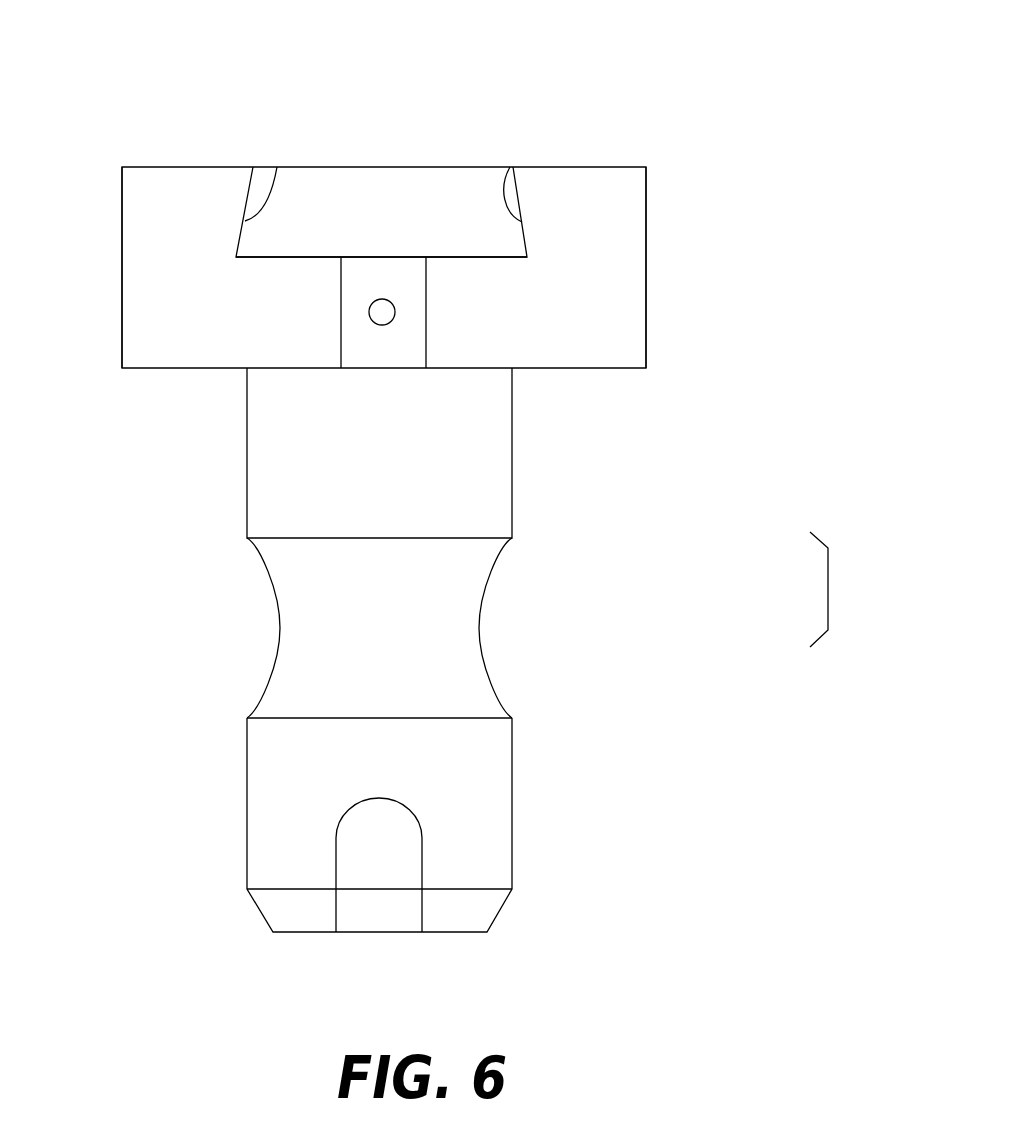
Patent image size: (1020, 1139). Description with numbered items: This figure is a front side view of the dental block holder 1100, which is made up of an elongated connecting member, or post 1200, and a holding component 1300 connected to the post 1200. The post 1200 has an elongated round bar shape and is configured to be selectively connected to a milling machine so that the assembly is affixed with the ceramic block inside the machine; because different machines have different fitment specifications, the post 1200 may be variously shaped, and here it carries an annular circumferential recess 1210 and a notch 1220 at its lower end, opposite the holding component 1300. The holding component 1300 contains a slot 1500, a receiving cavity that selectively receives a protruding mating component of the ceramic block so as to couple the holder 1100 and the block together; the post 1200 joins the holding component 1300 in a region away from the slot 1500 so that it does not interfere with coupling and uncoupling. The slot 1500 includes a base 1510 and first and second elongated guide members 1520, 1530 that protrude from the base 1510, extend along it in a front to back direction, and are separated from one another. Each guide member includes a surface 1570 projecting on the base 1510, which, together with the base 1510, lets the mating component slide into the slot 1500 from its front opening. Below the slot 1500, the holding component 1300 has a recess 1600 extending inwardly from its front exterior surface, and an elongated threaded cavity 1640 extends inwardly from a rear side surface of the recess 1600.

The holder 1100 is at (828, 590).
The post 1200 is at (512, 480).
The annular circumferential recess 1210 is at (278, 660).
The notch 1220 is at (420, 906).
The holding component 1300 is at (646, 262).
The slot 1500 is at (365, 200).
The base 1510 is at (434, 257).
The first elongated guide member 1520 is at (599, 167).
The second elongated guide member 1530 is at (184, 167).
The surface 1570 is at (277, 167).
The recess 1600 is at (396, 351).
The elongated threaded cavity 1640 is at (370, 325).